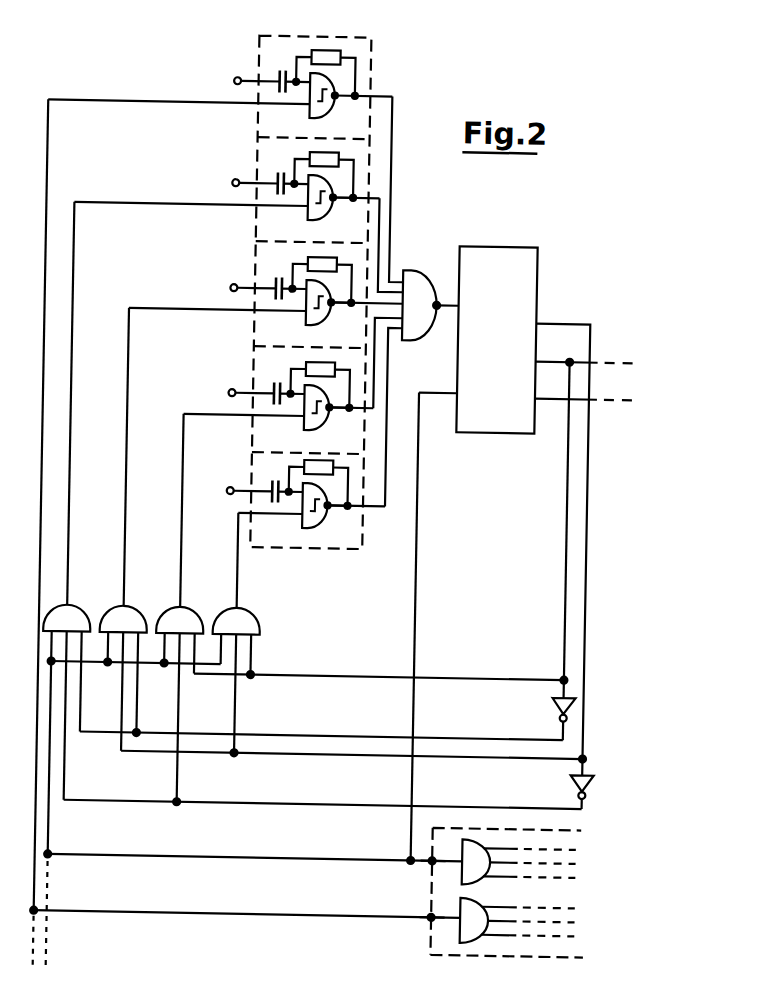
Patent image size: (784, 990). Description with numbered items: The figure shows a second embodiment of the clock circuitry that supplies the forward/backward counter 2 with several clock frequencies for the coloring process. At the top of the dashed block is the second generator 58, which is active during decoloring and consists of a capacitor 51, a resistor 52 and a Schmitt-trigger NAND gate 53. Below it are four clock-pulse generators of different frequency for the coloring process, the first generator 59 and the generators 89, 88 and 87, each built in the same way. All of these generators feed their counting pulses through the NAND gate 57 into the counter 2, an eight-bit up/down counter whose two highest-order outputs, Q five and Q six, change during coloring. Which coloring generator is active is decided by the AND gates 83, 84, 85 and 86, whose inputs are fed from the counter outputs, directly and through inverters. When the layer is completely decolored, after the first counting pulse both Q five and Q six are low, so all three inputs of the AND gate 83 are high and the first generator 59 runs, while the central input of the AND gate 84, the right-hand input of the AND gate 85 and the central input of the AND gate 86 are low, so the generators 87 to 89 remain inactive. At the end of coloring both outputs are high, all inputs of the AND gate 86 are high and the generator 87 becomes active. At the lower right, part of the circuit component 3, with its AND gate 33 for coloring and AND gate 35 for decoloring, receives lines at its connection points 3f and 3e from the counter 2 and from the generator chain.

The second generator 58 is at (230, 85).
The capacitor 51 is at (278, 76).
The resistor 52 is at (338, 59).
The Schmitt-trigger NAND gate 53 is at (319, 118).
The first generator 59 is at (254, 150).
The clock-pulse generator 89 is at (254, 256).
The clock-pulse generator 88 is at (254, 365).
The clock-pulse generator 87 is at (253, 470).
The NAND gate 57 is at (414, 272).
The forward/backward counter 2 is at (534, 283).
The AND gate 83 is at (68, 617).
The AND gate 84 is at (124, 617).
The AND gate 85 is at (181, 617).
The AND gate 86 is at (238, 617).
The AND gate 33 is at (480, 858).
The AND gate 35 is at (486, 910).
The circuit component 3 is at (441, 905).
The control unit terminal 3f is at (441, 862).
The control unit terminal 3e is at (441, 919).